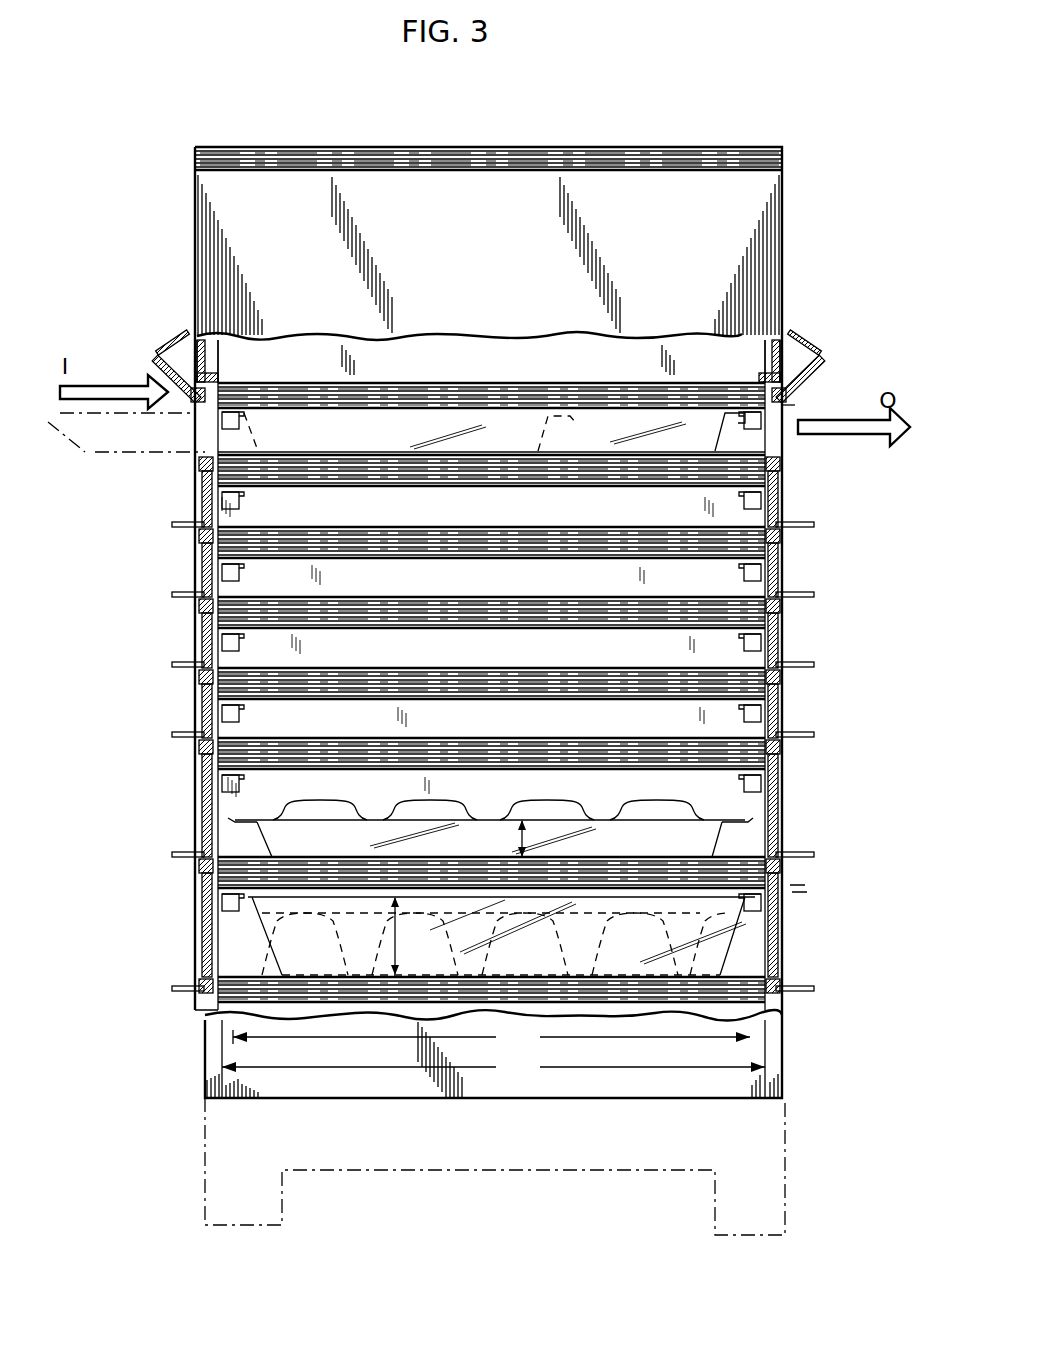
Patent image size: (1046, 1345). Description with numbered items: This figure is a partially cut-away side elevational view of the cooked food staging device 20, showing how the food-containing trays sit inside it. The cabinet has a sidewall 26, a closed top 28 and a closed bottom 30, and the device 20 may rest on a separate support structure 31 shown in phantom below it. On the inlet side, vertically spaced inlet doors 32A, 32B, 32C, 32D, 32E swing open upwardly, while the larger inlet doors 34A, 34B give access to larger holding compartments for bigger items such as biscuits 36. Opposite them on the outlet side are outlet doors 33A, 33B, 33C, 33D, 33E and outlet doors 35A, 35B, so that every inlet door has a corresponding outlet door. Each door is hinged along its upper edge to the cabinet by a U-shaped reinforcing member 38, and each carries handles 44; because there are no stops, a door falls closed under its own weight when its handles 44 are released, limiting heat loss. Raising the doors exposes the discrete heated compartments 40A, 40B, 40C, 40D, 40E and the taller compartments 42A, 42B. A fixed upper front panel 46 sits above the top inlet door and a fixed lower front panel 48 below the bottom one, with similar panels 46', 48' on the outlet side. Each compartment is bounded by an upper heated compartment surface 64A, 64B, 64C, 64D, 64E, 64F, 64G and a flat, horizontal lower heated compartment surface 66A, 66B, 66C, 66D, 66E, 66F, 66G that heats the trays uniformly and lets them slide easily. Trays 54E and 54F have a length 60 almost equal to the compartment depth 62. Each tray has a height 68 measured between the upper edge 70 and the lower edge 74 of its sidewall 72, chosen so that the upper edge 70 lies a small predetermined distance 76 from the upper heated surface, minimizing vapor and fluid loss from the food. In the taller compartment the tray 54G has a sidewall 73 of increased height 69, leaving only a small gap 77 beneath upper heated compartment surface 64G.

The cooked food staging device 20 is at (596, 136).
The sidewall 26 is at (672, 172).
The closed top 28 is at (278, 147).
The closed bottom 30 is at (246, 1100).
The support structure 31 is at (510, 1170).
The inlet door 32A is at (155, 358).
The inlet door 32B is at (200, 496).
The inlet door 32C is at (200, 566).
The inlet door 32D is at (200, 636).
The inlet door 32E is at (200, 706).
The outlet door 33A is at (790, 370).
The outlet door 33B is at (780, 520).
The outlet door 33C is at (780, 585).
The outlet door 33D is at (780, 655).
The outlet door 33E is at (780, 728).
The inlet door 34A is at (200, 780).
The inlet door 34B is at (200, 900).
The outlet door 35A is at (780, 780).
The outlet door 35B is at (780, 935).
The biscuits 36 is at (440, 805).
The reinforcing member 38 is at (195, 402).
The heated compartment 40A is at (755, 436).
The heated compartment 40B is at (762, 507).
The heated compartment 40C is at (762, 577).
The heated compartment 40D is at (762, 648).
The heated compartment 40E is at (762, 718).
The heated compartment 42A is at (762, 800).
The heated compartment 42B is at (762, 918).
The handle 44 is at (165, 338).
The fixed upper front panel 46 is at (172, 581).
The upper panel 46' is at (800, 610).
The fixed lower front panel 48 is at (164, 1059).
The lower panel 48' is at (817, 1059).
The tray 54E is at (582, 415).
The tray 54F is at (715, 840).
The tray 54G is at (720, 946).
The length 60 is at (491, 1037).
The depth 62 is at (493, 1067).
The upper heated compartment surface 64A is at (648, 418).
The upper heated compartment surface 64B is at (300, 493).
The upper heated compartment surface 64C is at (300, 565).
The upper heated compartment surface 64D is at (385, 635).
The upper heated compartment surface 64E is at (305, 705).
The upper heated compartment surface 64F is at (336, 775).
The upper heated compartment surface 64G is at (255, 968).
The lower heated compartment surface 66A is at (220, 452).
The lower heated compartment surface 66B is at (552, 522).
The lower heated compartment surface 66C is at (555, 594).
The lower heated compartment surface 66D is at (557, 662).
The lower heated compartment surface 66E is at (557, 734).
The lower heated compartment surface 66F is at (220, 850).
The lower heated compartment surface 66G is at (220, 978).
The height 68 is at (504, 838).
The increased height 69 is at (416, 936).
The upper edge 70 is at (670, 410).
The sidewall 72 is at (640, 421).
The sidewall 73 is at (660, 899).
The lower edge 74 is at (485, 452).
The distance 76 is at (790, 413).
The gap 77 is at (805, 890).